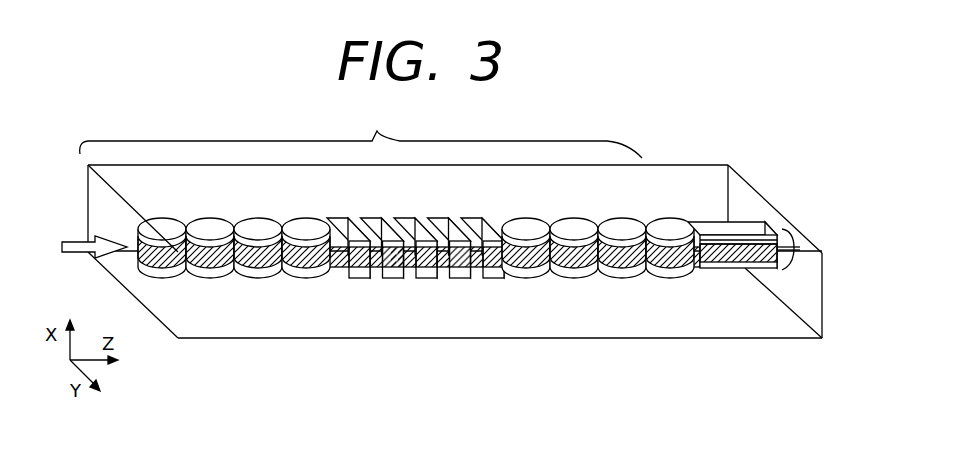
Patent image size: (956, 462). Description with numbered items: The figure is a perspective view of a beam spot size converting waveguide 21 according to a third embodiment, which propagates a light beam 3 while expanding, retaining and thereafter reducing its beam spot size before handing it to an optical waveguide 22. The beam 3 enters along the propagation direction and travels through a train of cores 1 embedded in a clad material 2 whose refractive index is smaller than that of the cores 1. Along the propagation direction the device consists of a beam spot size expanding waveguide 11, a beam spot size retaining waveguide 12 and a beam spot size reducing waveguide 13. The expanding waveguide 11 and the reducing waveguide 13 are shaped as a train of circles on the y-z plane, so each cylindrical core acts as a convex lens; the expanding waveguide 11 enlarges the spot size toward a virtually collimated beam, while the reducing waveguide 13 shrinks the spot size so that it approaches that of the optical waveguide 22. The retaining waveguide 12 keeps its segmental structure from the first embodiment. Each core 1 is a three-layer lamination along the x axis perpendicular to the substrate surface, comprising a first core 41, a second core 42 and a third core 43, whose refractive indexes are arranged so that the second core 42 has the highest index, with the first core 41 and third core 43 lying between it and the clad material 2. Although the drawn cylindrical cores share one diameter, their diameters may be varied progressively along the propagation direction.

The core 1 is at (796, 250).
The clad material 2 is at (597, 312).
The light beam 3 is at (77, 256).
The beam spot size expanding waveguide 11 is at (103, 195).
The beam spot size retaining waveguide 12 is at (405, 274).
The beam spot size reducing waveguide 13 is at (464, 195).
The beam spot size converting waveguide 21 is at (361, 131).
The optical waveguide 22 is at (659, 195).
The first core 41 is at (390, 278).
The second core 42 is at (398, 278).
The third core 43 is at (405, 278).